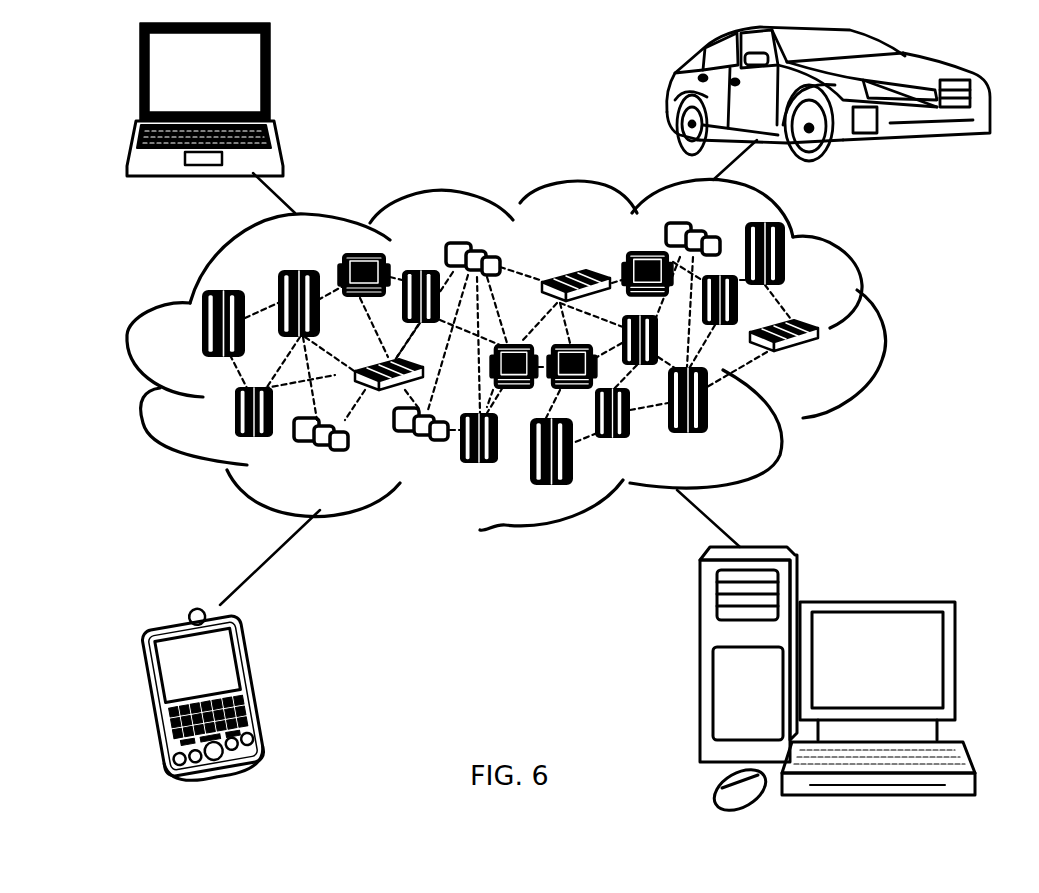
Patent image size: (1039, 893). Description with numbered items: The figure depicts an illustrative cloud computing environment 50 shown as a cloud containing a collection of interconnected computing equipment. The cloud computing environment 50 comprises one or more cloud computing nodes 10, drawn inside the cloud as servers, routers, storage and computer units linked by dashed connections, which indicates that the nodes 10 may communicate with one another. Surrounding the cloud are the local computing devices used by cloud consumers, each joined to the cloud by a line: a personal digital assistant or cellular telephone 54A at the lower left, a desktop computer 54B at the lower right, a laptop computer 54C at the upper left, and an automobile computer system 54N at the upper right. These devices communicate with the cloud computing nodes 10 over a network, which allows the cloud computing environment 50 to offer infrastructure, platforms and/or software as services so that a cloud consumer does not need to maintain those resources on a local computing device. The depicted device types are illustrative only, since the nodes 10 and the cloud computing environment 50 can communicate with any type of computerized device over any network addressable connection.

The cloud computing node 10 is at (836, 366).
The cloud computing environment 50 is at (877, 335).
The personal digital assistant or cellular telephone 54A is at (260, 687).
The desktop computer 54B is at (873, 602).
The laptop computer 54C is at (270, 80).
The automobile computer system 54N is at (672, 93).